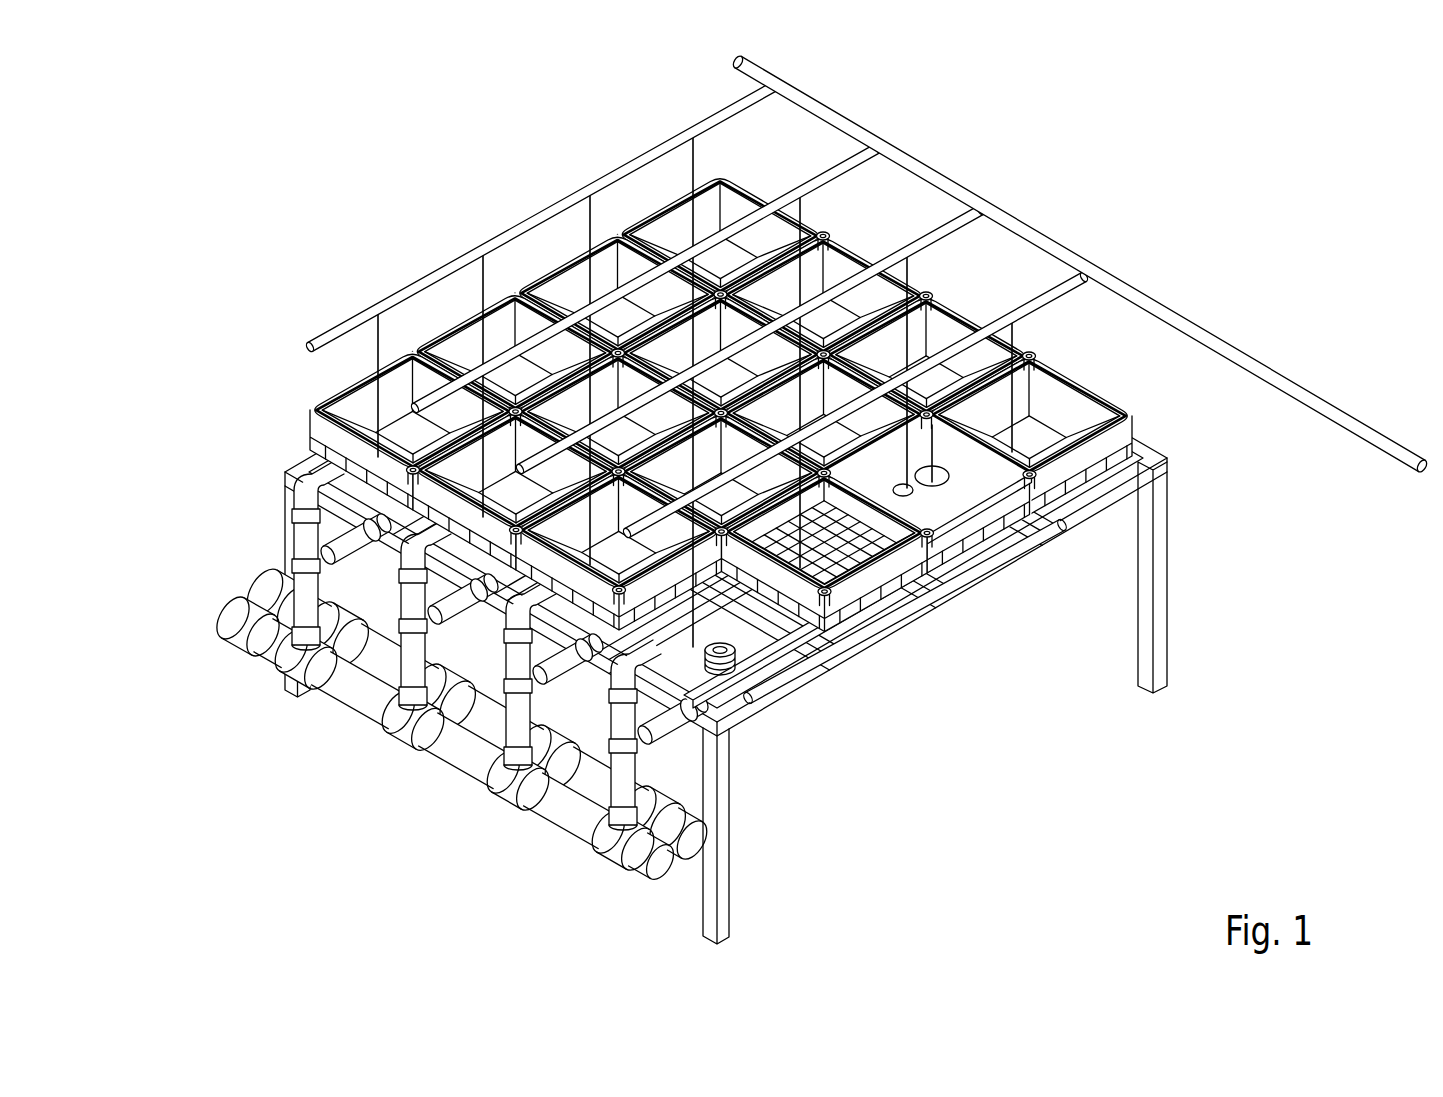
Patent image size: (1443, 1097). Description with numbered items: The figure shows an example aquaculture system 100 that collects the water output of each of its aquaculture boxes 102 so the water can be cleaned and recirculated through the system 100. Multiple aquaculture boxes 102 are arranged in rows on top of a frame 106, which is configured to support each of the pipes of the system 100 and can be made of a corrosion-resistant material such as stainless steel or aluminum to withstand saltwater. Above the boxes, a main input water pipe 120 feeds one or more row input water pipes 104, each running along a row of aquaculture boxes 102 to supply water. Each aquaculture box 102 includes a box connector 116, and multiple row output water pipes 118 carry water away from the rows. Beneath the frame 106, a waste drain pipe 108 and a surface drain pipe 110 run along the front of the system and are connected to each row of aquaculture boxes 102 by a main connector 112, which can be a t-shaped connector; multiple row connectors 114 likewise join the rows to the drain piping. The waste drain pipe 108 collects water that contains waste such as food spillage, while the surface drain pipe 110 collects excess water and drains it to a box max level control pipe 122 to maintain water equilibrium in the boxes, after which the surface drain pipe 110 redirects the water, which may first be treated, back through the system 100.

The aquaculture system 100 is at (204, 86).
The aquaculture box 102 is at (311, 406).
The row input water pipe 104 is at (445, 273).
The frame 106 is at (722, 787).
The waste drain pipe 108 is at (265, 585).
The surface drain pipe 110 is at (287, 737).
The main connector 112 is at (415, 697).
The row connector 114 is at (627, 660).
The box connector 116 is at (995, 810).
The row output water pipe 118 is at (897, 627).
The main input water pipe 120 is at (1352, 183).
The box max level control pipe 122 is at (618, 728).